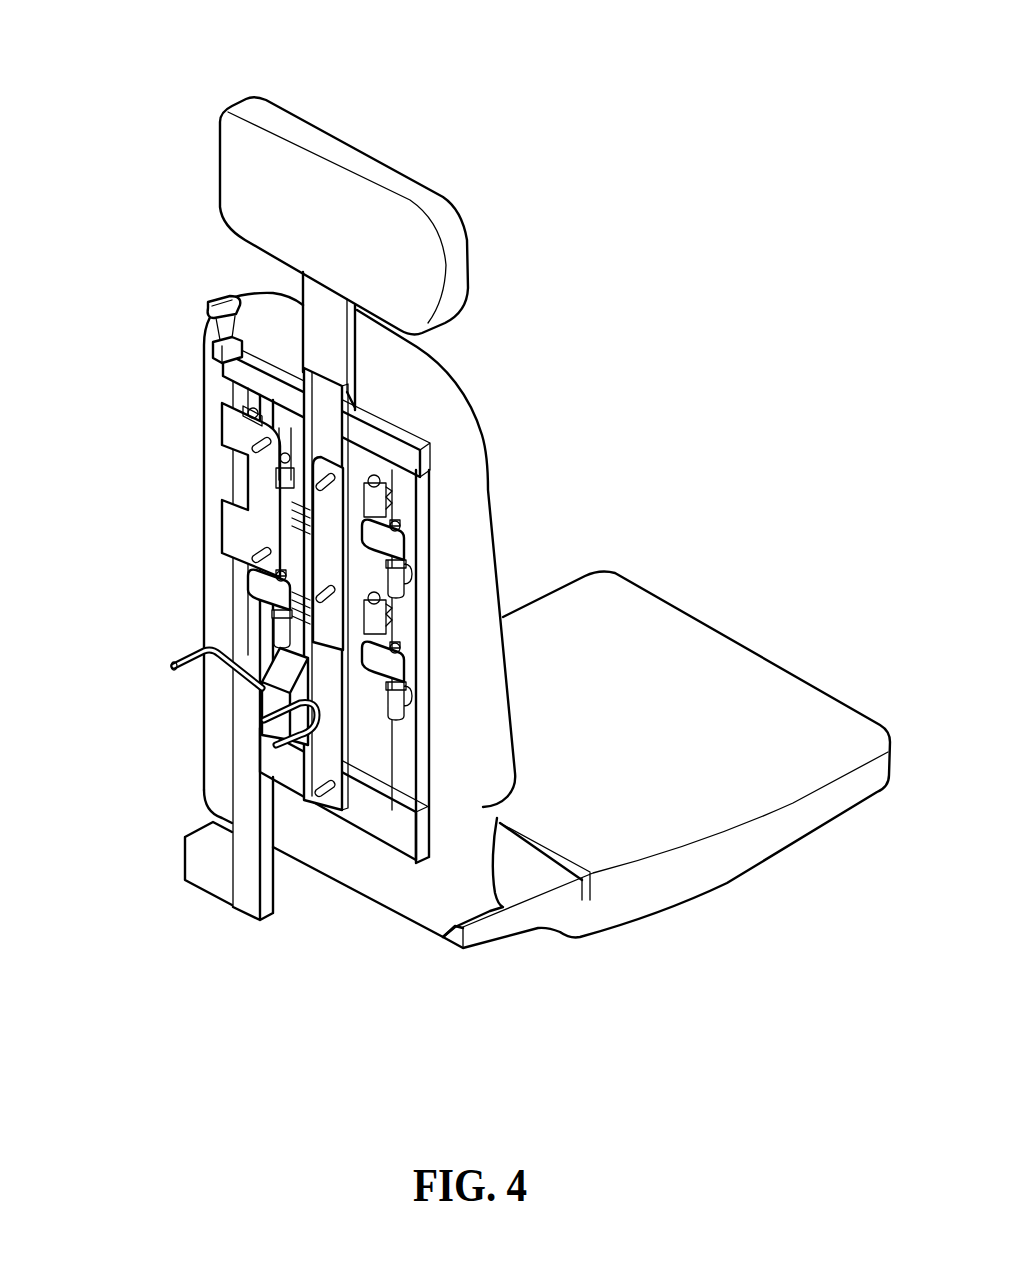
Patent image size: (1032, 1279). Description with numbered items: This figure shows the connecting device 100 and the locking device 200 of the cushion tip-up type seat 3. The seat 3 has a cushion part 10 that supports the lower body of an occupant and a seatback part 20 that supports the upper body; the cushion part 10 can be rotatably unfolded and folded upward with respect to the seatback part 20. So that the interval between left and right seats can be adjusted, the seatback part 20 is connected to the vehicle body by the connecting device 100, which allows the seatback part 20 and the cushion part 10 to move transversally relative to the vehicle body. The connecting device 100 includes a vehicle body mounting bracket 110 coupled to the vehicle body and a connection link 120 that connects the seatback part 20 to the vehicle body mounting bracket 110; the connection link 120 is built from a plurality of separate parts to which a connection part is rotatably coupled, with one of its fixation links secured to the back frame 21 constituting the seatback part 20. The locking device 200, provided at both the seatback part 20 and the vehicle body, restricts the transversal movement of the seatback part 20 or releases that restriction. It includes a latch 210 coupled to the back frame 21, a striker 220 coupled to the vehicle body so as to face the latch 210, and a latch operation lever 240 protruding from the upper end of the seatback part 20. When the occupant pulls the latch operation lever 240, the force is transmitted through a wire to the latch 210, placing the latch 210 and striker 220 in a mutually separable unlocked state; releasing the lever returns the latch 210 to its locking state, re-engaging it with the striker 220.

The cushion tip-up type seat 3 is at (340, 128).
The cushion part 10 is at (785, 697).
The seatback part 20 is at (467, 460).
The back frame 21 is at (390, 432).
The connecting device 100 is at (420, 689).
The vehicle body mounting bracket 110 is at (262, 497).
The connection link 120 is at (242, 580).
The locking device 200 is at (250, 708).
The latch 210 is at (273, 720).
The striker 220 is at (222, 667).
The latch operation lever 240 is at (208, 298).